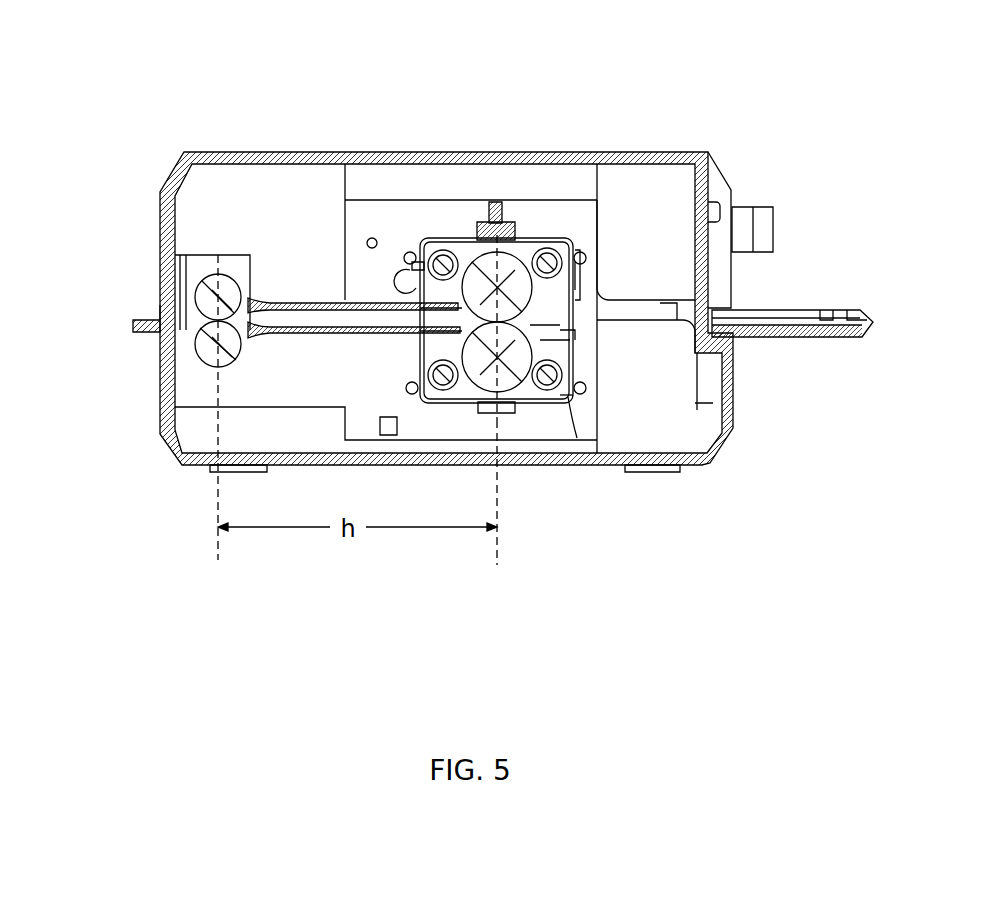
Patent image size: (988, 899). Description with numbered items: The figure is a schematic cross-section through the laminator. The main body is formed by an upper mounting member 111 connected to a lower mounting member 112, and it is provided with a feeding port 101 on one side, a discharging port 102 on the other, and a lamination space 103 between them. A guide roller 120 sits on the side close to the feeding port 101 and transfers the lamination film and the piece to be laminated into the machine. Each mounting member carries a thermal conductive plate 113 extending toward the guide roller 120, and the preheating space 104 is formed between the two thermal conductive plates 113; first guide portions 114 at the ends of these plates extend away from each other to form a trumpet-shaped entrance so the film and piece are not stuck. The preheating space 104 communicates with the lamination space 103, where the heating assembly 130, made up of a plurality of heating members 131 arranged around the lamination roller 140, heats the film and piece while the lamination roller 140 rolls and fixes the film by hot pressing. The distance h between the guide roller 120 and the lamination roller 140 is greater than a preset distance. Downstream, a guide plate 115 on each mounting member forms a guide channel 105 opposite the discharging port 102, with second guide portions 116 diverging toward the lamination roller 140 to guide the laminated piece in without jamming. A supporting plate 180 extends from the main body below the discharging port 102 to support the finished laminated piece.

The feeding port 101 is at (158, 308).
The discharging port 102 is at (707, 300).
The lamination space 103 is at (417, 280).
The preheating space 104 is at (327, 327).
The guide channel 105 is at (580, 300).
The upper mounting member 111 is at (433, 250).
The lower mounting member 112 is at (440, 400).
The thermal conductive plate 113 is at (320, 303).
The first guide portion 114 is at (217, 293).
The guide plate 115 is at (578, 350).
The second guide portion 116 is at (575, 252).
The guide roller 120 is at (207, 357).
The heating assembly 130 is at (546, 204).
The heating member 131 is at (450, 257).
The lamination roller 140 is at (512, 365).
The supporting plate 180 is at (763, 332).